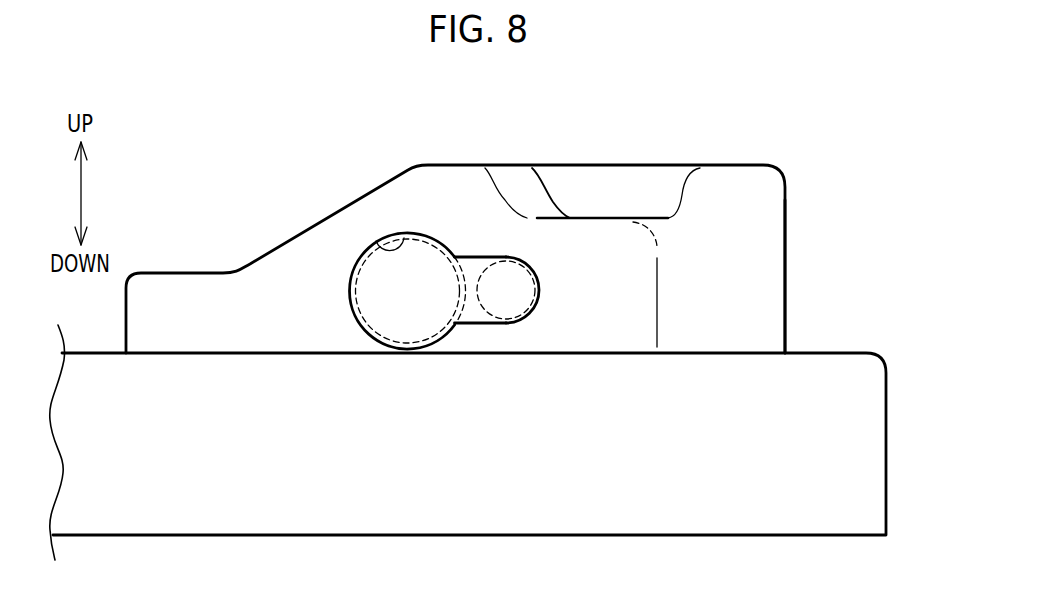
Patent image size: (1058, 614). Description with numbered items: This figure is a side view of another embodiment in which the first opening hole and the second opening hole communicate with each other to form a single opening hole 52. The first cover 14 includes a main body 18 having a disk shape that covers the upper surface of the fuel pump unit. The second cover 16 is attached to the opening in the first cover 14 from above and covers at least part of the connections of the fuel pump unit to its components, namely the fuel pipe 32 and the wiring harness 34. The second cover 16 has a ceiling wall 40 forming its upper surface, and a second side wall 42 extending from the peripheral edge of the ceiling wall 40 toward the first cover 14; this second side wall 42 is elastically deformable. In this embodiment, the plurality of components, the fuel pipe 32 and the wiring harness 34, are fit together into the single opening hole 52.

The first cover 14 is at (833, 343).
The second cover 16 is at (737, 150).
The main body 18 is at (702, 457).
The fuel pipe 32 is at (352, 300).
The wiring harness 34 is at (540, 283).
The ceiling wall 40 is at (607, 165).
The second side wall 42 is at (800, 253).
The single opening hole 52 is at (376, 241).